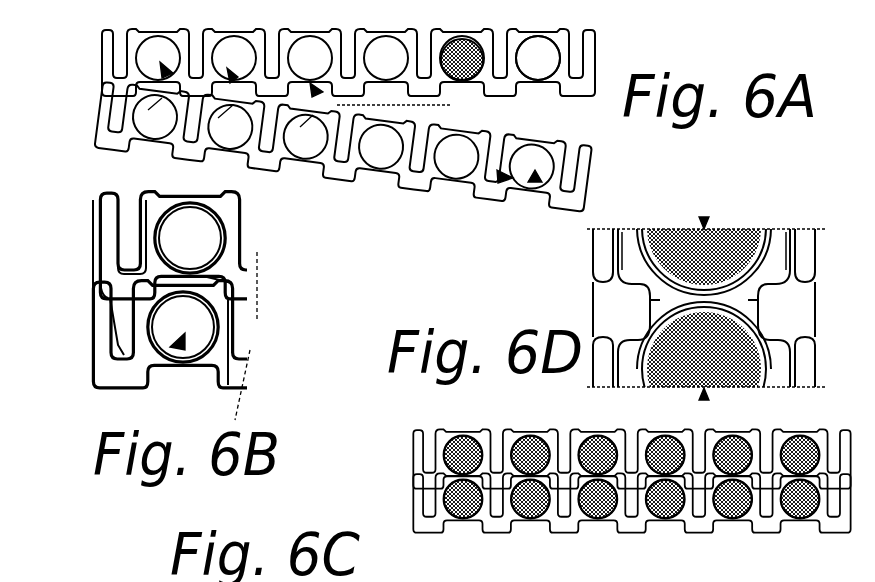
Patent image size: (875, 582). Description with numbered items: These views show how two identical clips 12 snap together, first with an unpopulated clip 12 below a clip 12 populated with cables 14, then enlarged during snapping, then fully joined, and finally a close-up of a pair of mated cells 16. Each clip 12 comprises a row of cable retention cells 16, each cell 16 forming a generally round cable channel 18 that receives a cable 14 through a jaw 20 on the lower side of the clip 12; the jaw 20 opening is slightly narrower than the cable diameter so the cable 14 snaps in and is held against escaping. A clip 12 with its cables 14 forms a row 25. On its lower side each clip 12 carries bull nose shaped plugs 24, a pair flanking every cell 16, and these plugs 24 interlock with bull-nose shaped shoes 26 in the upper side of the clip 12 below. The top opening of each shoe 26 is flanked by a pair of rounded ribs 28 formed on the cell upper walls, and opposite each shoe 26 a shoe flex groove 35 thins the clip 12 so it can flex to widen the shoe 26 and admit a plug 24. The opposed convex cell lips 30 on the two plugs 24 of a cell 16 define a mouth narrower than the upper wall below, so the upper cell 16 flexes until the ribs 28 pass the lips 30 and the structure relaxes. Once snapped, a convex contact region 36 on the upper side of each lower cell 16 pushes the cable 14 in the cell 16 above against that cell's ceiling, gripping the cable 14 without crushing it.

In FIG. 6A, the clip 12 is at (598, 63).
In FIG. 6A, the cable 14 is at (543, 62).
In FIG. 6B, the cable 14 is at (200, 225).
In FIG. 6D, the cable 14 is at (648, 262).
In FIG. 6A, the cable retention cell 16 is at (497, 183).
In FIG. 6A, the cable channel 18 is at (533, 187).
In FIG. 6B, the cable channel 18 is at (178, 346).
In FIG. 6B, the jaw 20 is at (243, 277).
In FIG. 6D, the jaw 20 is at (757, 282).
In FIG. 6B, the bull nose shaped plug 24 is at (147, 296).
In FIG. 6C, the row 25 is at (388, 500).
In FIG. 6B, the shoe 26 is at (230, 345).
In FIG. 6B, the rounded rib 28 is at (152, 250).
In FIG. 6D, the rounded rib 28 is at (745, 305).
In FIG. 6B, the cell lip 30 is at (145, 292).
In FIG. 6D, the cell lip 30 is at (630, 320).
In FIG. 6B, the shoe flex groove 35 is at (115, 328).
In FIG. 6B, the contact region 36 is at (208, 280).